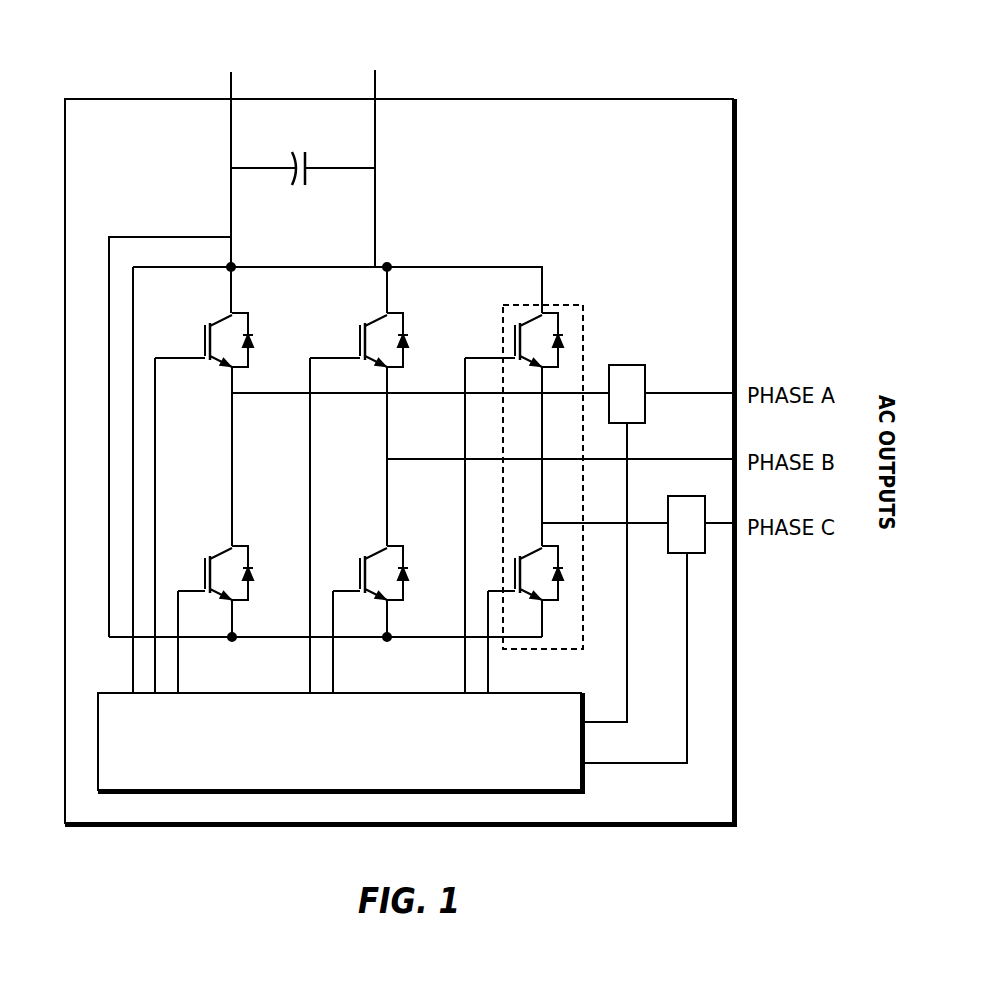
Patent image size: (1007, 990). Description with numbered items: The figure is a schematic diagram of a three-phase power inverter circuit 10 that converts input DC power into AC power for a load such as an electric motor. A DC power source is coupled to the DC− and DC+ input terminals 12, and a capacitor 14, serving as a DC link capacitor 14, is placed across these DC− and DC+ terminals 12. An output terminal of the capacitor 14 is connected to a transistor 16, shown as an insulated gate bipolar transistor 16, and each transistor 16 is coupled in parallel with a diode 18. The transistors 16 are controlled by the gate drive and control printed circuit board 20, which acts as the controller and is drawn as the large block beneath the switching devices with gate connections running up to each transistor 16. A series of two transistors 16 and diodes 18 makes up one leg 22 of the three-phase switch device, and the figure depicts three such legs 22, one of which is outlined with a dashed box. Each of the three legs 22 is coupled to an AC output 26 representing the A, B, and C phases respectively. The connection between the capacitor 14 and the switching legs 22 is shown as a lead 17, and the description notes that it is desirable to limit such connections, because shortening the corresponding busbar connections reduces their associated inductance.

The power inverter circuit 10 is at (130, 99).
The DC input terminals 12 is at (231, 80).
The capacitor 14 is at (307, 178).
The transistor 16 is at (222, 323).
The lead 17 is at (135, 237).
The diode 18 is at (249, 335).
The gate drive and control PCB 20 is at (98, 715).
The leg 22 is at (567, 303).
The AC output 26 is at (634, 39).